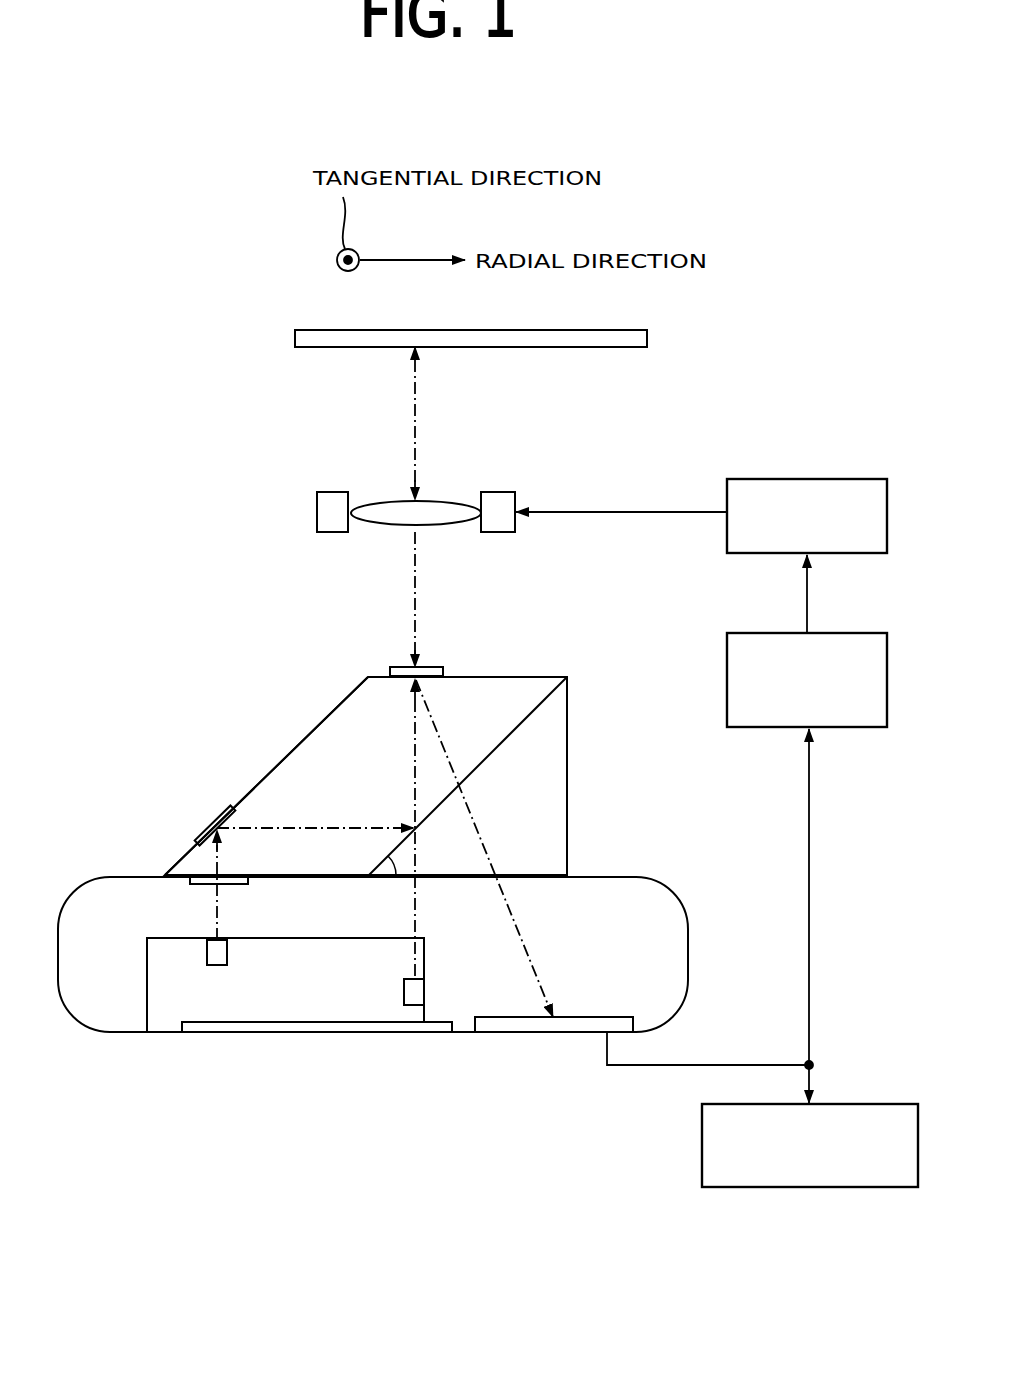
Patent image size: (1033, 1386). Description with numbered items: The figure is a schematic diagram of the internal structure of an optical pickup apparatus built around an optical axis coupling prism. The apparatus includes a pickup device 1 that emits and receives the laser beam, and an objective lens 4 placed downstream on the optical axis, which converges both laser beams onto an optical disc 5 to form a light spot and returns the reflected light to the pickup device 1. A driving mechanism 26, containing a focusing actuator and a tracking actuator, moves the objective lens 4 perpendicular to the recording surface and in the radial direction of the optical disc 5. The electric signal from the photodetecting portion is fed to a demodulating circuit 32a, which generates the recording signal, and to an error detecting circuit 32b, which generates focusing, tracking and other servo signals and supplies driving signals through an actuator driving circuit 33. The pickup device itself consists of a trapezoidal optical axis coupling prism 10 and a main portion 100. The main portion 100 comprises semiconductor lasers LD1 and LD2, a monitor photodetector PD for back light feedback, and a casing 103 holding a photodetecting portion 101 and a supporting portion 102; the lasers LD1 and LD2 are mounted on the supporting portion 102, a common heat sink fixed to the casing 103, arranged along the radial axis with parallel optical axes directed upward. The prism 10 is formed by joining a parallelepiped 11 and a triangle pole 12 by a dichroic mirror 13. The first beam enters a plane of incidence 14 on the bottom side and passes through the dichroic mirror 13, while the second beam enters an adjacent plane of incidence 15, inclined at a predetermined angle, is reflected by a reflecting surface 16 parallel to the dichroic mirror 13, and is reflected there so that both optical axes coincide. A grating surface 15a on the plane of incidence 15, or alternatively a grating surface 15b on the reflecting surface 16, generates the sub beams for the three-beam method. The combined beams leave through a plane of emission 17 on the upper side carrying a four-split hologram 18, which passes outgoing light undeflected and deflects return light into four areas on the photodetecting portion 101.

The pickup device 1 is at (632, 778).
The objective lens 4 is at (443, 500).
The optical disc 5 is at (648, 338).
The optical axis coupling prism 10 is at (387, 761).
The parallelepiped 11 is at (535, 690).
The triangle pole 12 is at (562, 848).
The dichroic mirror 13 is at (535, 712).
The plane of incidence 14 is at (462, 877).
The plane of incidence 15 is at (302, 880).
The grating surface 15a is at (202, 887).
The grating surface 15b is at (217, 823).
The reflecting surface 16 is at (330, 717).
The plane of emission 17 is at (480, 677).
The 4-split hologram 18 is at (430, 667).
The driving mechanism 26 is at (500, 492).
The demodulating circuit 32a is at (878, 1104).
The error detecting circuit 32b is at (853, 633).
The actuator driving circuit 33 is at (853, 478).
The main portion 100 is at (361, 1017).
The photodetecting portion 101 is at (543, 1030).
The supporting portion 102 is at (158, 1000).
The casing 103 is at (98, 878).
The semiconductor laser LD1 is at (413, 1005).
The semiconductor laser LD2 is at (215, 965).
The monitor photodetector PD is at (323, 1033).